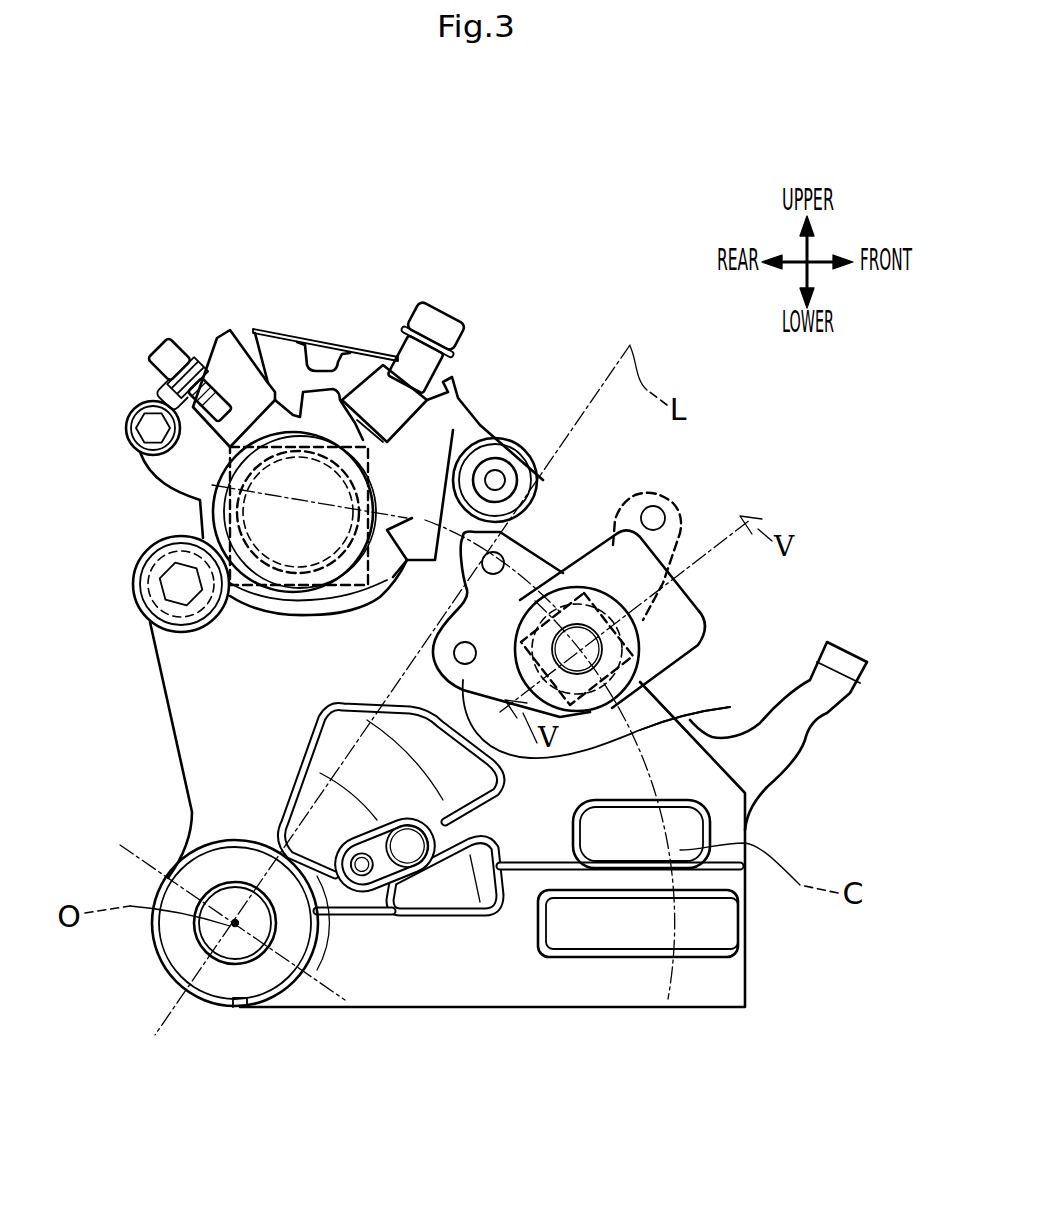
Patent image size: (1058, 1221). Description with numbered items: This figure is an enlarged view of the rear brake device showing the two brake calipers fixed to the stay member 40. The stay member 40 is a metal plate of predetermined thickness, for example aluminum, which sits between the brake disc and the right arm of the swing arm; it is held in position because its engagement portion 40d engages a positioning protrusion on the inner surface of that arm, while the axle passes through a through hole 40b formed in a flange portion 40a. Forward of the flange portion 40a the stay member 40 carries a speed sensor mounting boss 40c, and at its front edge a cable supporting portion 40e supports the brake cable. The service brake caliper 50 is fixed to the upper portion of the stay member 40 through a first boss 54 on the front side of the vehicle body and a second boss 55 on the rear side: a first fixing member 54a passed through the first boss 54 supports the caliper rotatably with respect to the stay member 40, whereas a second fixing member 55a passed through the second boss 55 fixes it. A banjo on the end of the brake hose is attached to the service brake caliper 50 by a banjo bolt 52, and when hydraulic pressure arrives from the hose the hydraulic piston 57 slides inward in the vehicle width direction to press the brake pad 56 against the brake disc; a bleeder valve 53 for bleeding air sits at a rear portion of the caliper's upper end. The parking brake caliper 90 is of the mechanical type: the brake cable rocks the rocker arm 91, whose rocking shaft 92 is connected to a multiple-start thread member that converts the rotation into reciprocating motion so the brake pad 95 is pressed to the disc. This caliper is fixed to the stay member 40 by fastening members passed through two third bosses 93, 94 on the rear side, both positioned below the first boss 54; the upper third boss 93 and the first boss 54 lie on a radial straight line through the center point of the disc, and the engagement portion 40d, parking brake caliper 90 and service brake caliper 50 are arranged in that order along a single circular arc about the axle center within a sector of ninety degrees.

The stay member 40 is at (197, 738).
The flange portion 40a is at (180, 957).
The through hole 40b is at (240, 939).
The speed sensor mounting boss 40c is at (383, 868).
The engagement portion 40d is at (600, 935).
The cable supporting portion 40e is at (797, 718).
The service brake caliper 50 is at (277, 327).
The banjo bolt 52 is at (440, 328).
The bleeder valve 53 is at (180, 355).
The first boss 54 is at (412, 522).
The first fixing member 54a is at (503, 470).
The second boss 55 is at (147, 578).
The second fixing member 55a is at (147, 628).
The brake pad 56 is at (238, 510).
The hydraulic piston 57 is at (220, 487).
The parking brake caliper 90 is at (710, 627).
The rocker arm 91 is at (668, 508).
The rocking shaft 92 is at (590, 650).
The third boss 93 is at (510, 537).
The third boss 94 is at (705, 710).
The brake pad 95 is at (618, 505).